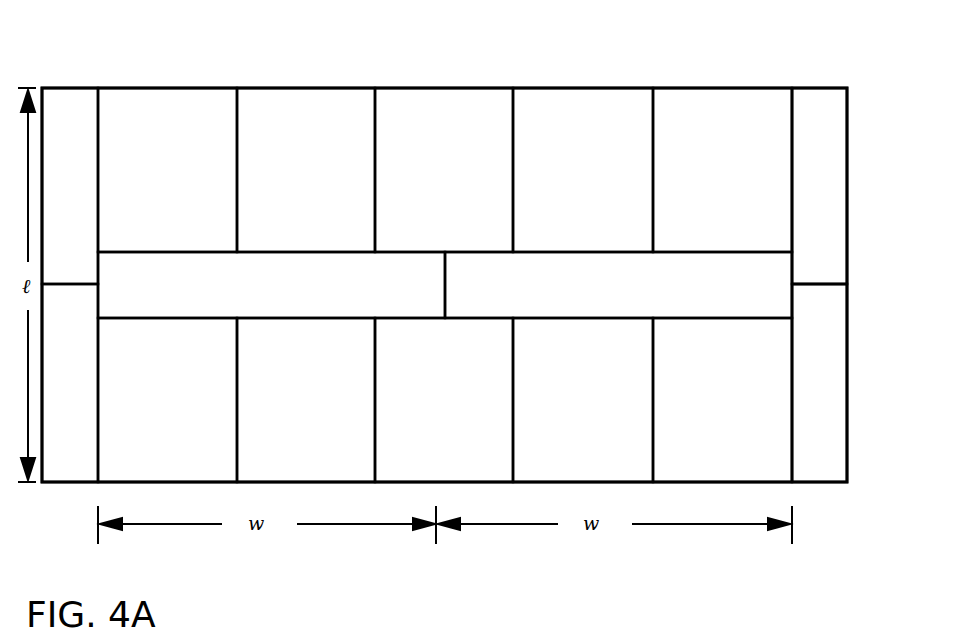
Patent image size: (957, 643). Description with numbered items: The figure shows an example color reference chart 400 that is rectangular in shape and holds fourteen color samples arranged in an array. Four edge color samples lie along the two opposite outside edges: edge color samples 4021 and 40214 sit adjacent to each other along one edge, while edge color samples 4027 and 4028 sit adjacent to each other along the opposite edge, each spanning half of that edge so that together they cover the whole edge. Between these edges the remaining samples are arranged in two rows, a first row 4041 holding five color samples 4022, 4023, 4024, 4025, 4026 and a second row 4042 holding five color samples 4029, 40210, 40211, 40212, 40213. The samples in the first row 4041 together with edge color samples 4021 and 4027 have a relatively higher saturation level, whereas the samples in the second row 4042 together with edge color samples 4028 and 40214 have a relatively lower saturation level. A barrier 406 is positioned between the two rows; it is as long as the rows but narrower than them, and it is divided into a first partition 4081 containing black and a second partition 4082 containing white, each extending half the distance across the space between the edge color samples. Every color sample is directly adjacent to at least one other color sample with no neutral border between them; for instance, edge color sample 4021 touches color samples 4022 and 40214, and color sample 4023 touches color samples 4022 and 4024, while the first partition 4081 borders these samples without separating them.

The color reference chart 400 is at (148, 32).
The edge color sample 4021 is at (90, 279).
The color sample 4022 is at (187, 240).
The color sample 4023 is at (322, 234).
The color sample 4024 is at (458, 240).
The color sample 4025 is at (597, 240).
The color sample 4026 is at (737, 234).
The edge color sample 4027 is at (841, 248).
The edge color sample 4028 is at (841, 447).
The color sample 4029 is at (742, 462).
The color sample 40210 is at (609, 463).
The color sample 40211 is at (475, 462).
The color sample 40212 is at (330, 462).
The color sample 40213 is at (192, 462).
The edge color sample 40214 is at (95, 454).
The first row 4041 is at (792, 207).
The second row 4042 is at (792, 368).
The barrier 406 is at (792, 283).
The first partition 4081 is at (291, 303).
The second partition 4082 is at (639, 302).